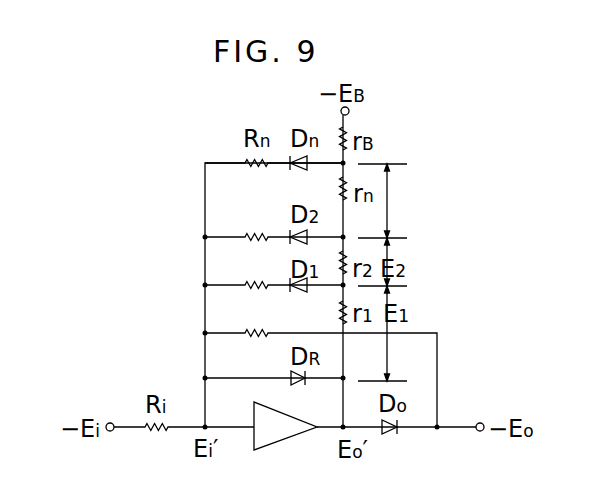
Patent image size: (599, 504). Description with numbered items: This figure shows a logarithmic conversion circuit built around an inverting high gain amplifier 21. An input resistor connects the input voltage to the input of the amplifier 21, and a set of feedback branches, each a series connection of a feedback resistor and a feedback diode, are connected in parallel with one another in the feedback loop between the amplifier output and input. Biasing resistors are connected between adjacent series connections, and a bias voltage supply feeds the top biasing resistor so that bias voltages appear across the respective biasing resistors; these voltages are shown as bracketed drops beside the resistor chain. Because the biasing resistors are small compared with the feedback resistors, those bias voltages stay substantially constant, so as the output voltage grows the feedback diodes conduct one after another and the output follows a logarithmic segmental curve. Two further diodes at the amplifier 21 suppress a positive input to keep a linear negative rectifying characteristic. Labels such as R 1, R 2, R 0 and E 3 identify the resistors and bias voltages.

The inverting high gain amplifier 21 is at (287, 437).
The resistor R1 1 is at (247, 272).
The resistor R2 2 is at (247, 221).
The resistor R0 0 is at (252, 320).
The voltage E3 bracket 3 is at (383, 201).